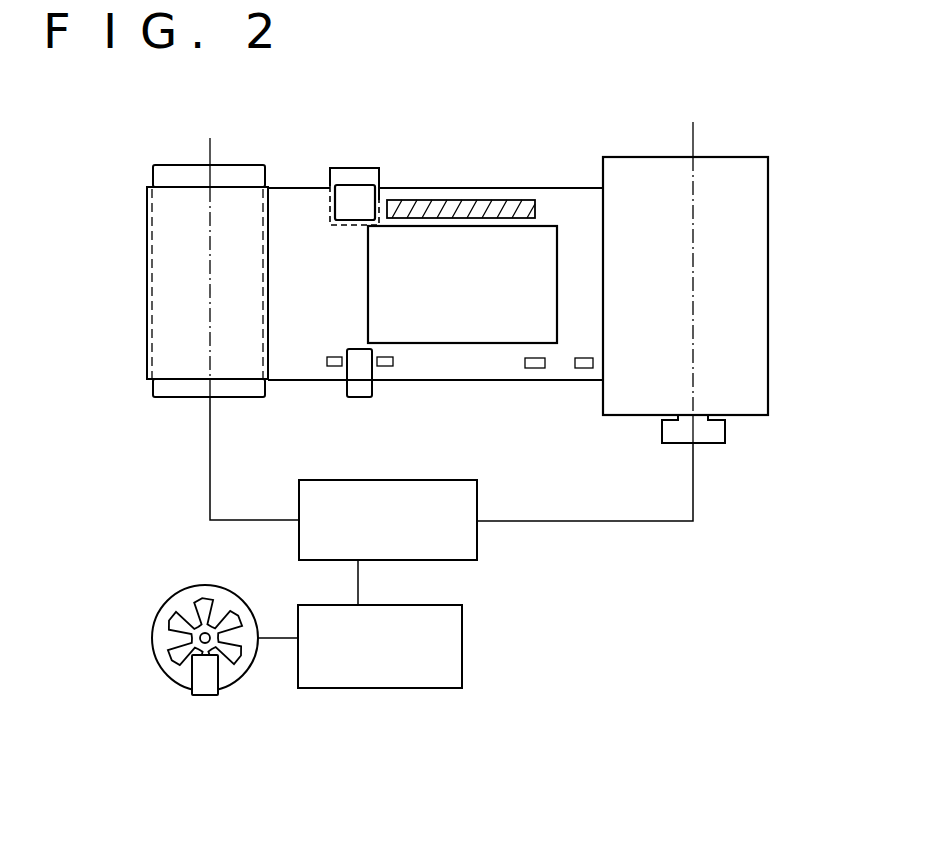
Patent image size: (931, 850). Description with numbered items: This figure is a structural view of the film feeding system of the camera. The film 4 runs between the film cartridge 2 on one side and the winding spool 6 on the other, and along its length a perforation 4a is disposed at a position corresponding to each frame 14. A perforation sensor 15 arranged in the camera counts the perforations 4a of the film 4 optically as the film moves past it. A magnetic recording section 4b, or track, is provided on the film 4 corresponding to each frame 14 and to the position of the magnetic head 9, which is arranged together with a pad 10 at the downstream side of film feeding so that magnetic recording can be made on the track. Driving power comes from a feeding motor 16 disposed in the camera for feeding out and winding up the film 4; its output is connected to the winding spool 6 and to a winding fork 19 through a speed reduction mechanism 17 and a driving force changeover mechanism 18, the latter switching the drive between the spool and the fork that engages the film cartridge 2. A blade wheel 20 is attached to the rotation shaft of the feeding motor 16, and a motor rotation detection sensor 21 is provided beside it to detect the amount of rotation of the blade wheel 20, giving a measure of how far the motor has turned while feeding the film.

The film cartridge 2 is at (765, 238).
The film 4 is at (560, 188).
The perforation 4a is at (538, 370).
The magnetic recording section 4b is at (472, 205).
The winding spool 6 is at (165, 390).
The magnetic head 9 is at (360, 177).
The pad 10 is at (342, 200).
The frame 14 is at (485, 345).
The perforation sensor 15 is at (350, 386).
The feeding motor 16 is at (163, 612).
The speed reduction mechanism 17 is at (463, 640).
The driving force changeover mechanism 18 is at (388, 478).
The winding fork 19 is at (705, 443).
The blade wheel 20 is at (170, 652).
The motor rotation detection sensor 21 is at (215, 690).